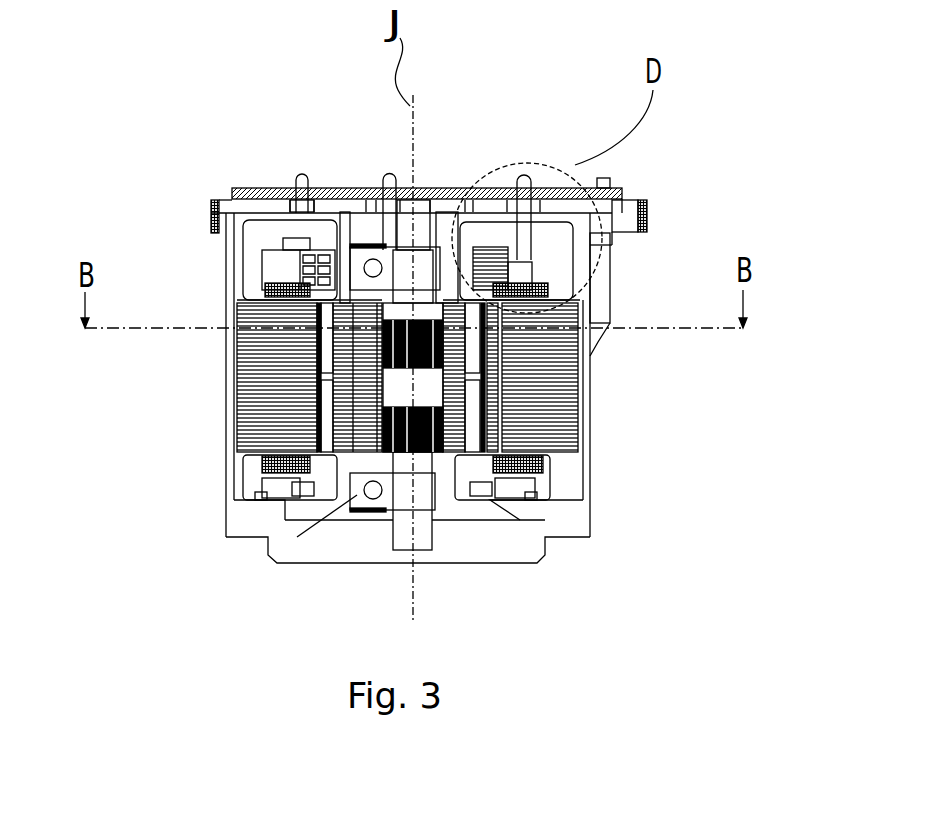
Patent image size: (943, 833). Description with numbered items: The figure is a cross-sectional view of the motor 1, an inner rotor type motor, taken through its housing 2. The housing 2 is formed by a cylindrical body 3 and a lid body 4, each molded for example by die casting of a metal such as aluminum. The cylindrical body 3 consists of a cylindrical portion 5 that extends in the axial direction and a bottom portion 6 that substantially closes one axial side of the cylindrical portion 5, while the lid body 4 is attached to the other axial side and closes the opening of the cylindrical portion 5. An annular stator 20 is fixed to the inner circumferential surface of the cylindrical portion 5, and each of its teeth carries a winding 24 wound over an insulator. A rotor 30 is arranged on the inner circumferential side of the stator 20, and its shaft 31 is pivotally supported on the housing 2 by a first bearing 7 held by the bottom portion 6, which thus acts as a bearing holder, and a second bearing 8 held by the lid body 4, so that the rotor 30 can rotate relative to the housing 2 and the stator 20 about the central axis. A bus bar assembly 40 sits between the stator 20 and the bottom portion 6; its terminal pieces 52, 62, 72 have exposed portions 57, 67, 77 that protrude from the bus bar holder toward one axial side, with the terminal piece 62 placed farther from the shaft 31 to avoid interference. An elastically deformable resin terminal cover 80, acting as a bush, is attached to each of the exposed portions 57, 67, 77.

The motor 1 is at (668, 163).
The housing 2 is at (500, 370).
The cylindrical body 3 is at (500, 357).
The lid body 4 is at (583, 525).
The cylindrical portion 5 is at (582, 415).
The bottom portion 6 is at (618, 221).
The first bearing 7 is at (357, 190).
The second bearing 8 is at (338, 512).
The stator 20 is at (353, 400).
The winding 24 is at (296, 287).
The rotor 30 is at (318, 367).
The shaft 31 is at (420, 258).
The bus bar assembly 40 is at (233, 256).
The terminal piece 52 is at (274, 154).
The exposed portion 57 is at (305, 176).
The terminal piece 62 is at (380, 179).
The exposed portion 67 is at (393, 170).
The terminal piece 72 is at (516, 177).
The exposed portion 77 is at (522, 170).
The terminal cover 80 is at (523, 228).